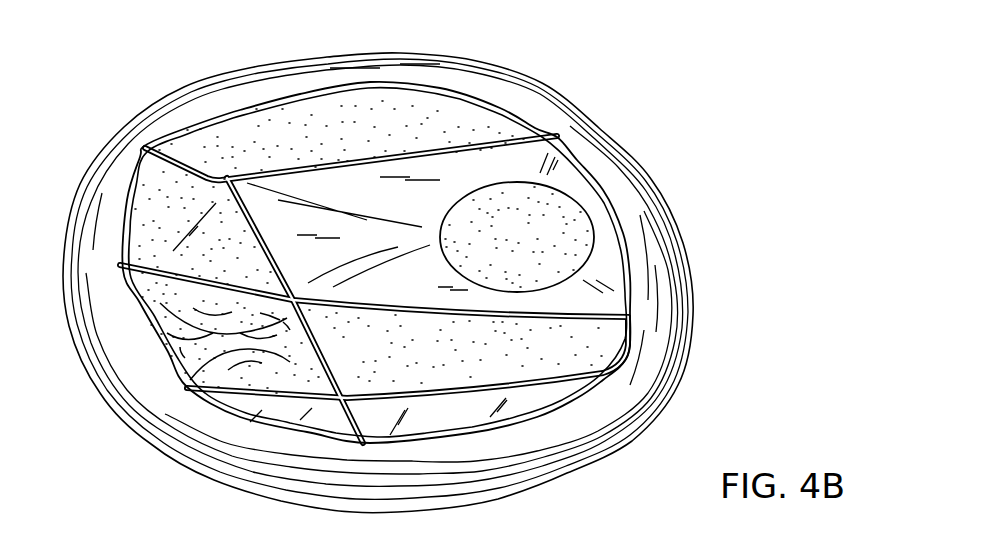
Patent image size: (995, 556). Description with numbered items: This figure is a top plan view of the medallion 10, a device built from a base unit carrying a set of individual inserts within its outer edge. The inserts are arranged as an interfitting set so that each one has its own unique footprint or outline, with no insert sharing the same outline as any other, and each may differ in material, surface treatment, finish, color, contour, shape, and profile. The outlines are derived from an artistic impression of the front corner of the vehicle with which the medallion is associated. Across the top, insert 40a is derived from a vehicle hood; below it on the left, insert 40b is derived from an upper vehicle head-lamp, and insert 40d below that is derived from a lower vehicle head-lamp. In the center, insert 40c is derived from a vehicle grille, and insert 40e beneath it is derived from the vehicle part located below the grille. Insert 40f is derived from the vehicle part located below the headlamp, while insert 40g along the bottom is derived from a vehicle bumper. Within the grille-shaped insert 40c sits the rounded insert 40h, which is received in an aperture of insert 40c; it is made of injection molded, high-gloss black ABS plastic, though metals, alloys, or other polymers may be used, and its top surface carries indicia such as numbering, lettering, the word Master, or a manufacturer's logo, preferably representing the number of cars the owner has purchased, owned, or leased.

The medallion 10 is at (174, 92).
The insert 40a is at (447, 103).
The insert 40b is at (147, 192).
The insert 40c is at (573, 175).
The insert 40d is at (150, 328).
The insert 40e is at (610, 332).
The insert 40f is at (270, 418).
The insert 40g is at (548, 395).
The insert 40h is at (569, 217).